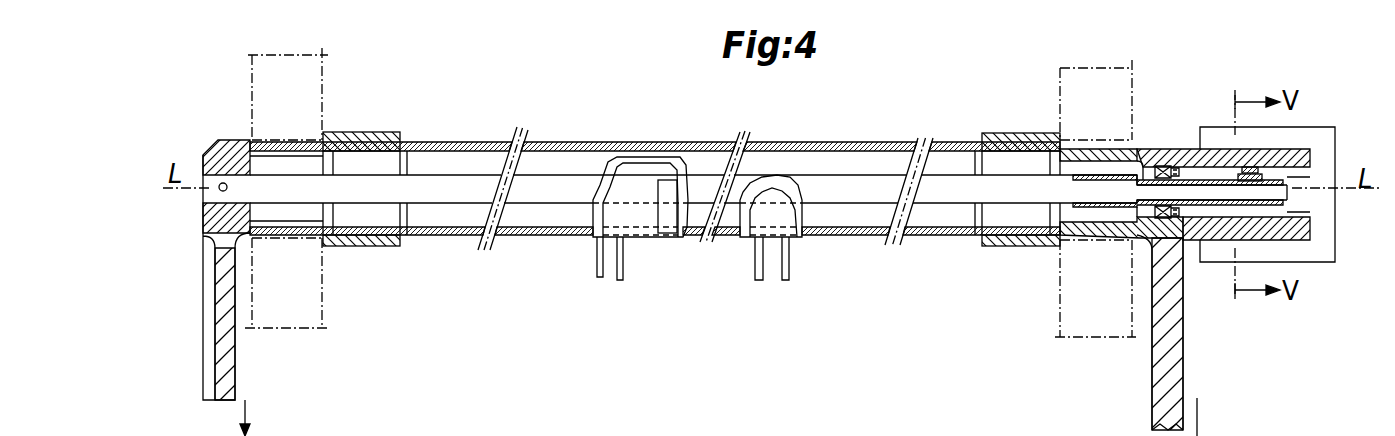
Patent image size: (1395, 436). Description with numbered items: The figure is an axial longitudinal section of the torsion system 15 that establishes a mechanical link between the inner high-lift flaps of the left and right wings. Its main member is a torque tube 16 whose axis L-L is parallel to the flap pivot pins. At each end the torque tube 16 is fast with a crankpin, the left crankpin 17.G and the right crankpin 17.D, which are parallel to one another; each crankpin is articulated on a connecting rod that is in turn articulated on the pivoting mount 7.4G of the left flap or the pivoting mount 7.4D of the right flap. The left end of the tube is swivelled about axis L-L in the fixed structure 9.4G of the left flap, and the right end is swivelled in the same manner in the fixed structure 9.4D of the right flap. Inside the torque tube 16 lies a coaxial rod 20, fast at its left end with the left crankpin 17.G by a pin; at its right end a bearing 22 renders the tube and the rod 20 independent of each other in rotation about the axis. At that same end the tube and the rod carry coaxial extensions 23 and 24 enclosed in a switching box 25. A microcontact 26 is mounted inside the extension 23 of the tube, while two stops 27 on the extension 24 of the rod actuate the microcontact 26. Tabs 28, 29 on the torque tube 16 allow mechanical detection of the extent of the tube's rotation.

The torsion system 15 is at (685, 266).
The torque tube 16 is at (650, 142).
The coaxial rod 20 is at (548, 193).
The bearing 22 is at (1163, 165).
The extension of tube 23 is at (1290, 152).
The extension of rod 24 is at (1280, 205).
The switching box 25 is at (1327, 262).
The microcontact 26 is at (1249, 167).
The stops 27 is at (1263, 178).
The tab 28 is at (624, 267).
The tab 29 is at (757, 262).
The left crankpin 17.G is at (228, 365).
The right crankpin 17.D is at (1160, 376).
The fixed structure of left flap 9.4G is at (322, 78).
The fixed structure of right flap 9.4D is at (1068, 86).
The pivoting mount of left flap 7.4G is at (245, 420).
The pivoting mount of right flap 7.4D is at (1227, 417).